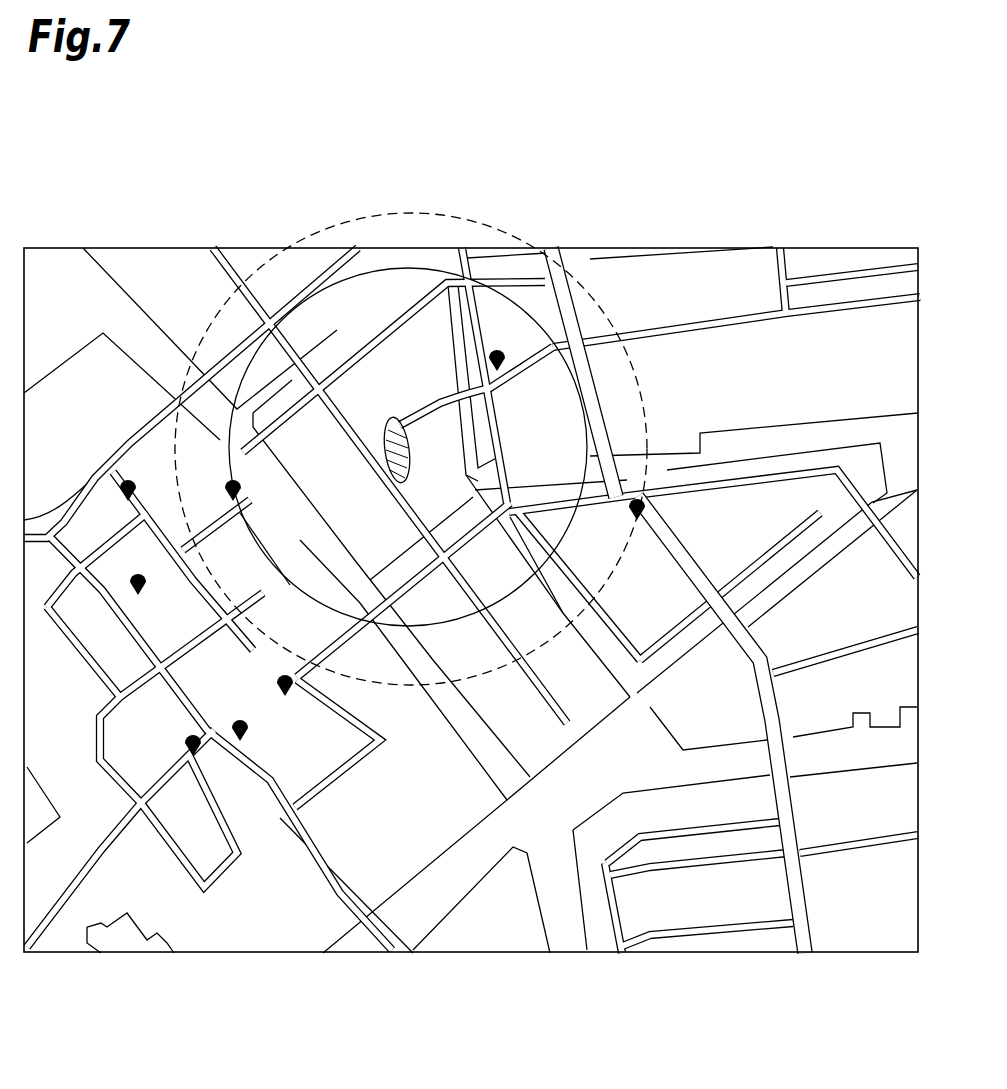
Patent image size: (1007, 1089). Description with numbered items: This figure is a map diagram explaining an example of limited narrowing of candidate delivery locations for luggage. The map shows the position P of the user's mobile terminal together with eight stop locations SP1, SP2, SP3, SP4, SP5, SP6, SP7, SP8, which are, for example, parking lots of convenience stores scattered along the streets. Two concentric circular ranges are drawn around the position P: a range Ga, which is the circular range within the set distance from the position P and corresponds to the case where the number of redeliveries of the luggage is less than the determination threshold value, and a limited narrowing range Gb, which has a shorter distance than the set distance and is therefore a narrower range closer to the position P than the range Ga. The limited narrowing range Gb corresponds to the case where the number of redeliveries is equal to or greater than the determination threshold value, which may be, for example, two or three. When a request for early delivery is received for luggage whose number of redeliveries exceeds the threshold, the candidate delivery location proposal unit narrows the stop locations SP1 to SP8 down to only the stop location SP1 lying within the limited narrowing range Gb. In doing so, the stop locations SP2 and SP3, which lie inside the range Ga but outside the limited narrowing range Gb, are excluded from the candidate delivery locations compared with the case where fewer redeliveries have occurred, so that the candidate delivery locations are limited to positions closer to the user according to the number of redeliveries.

The stop location SP1 is at (496, 342).
The stop location SP2 is at (233, 480).
The stop location SP3 is at (630, 498).
The stop location SP4 is at (123, 482).
The stop location SP5 is at (136, 574).
The stop location SP6 is at (280, 679).
The stop location SP7 is at (260, 708).
The stop location SP8 is at (213, 736).
The position of the user's mobile terminal P is at (396, 414).
The range Ga is at (468, 213).
The limited narrowing range Gb is at (416, 265).